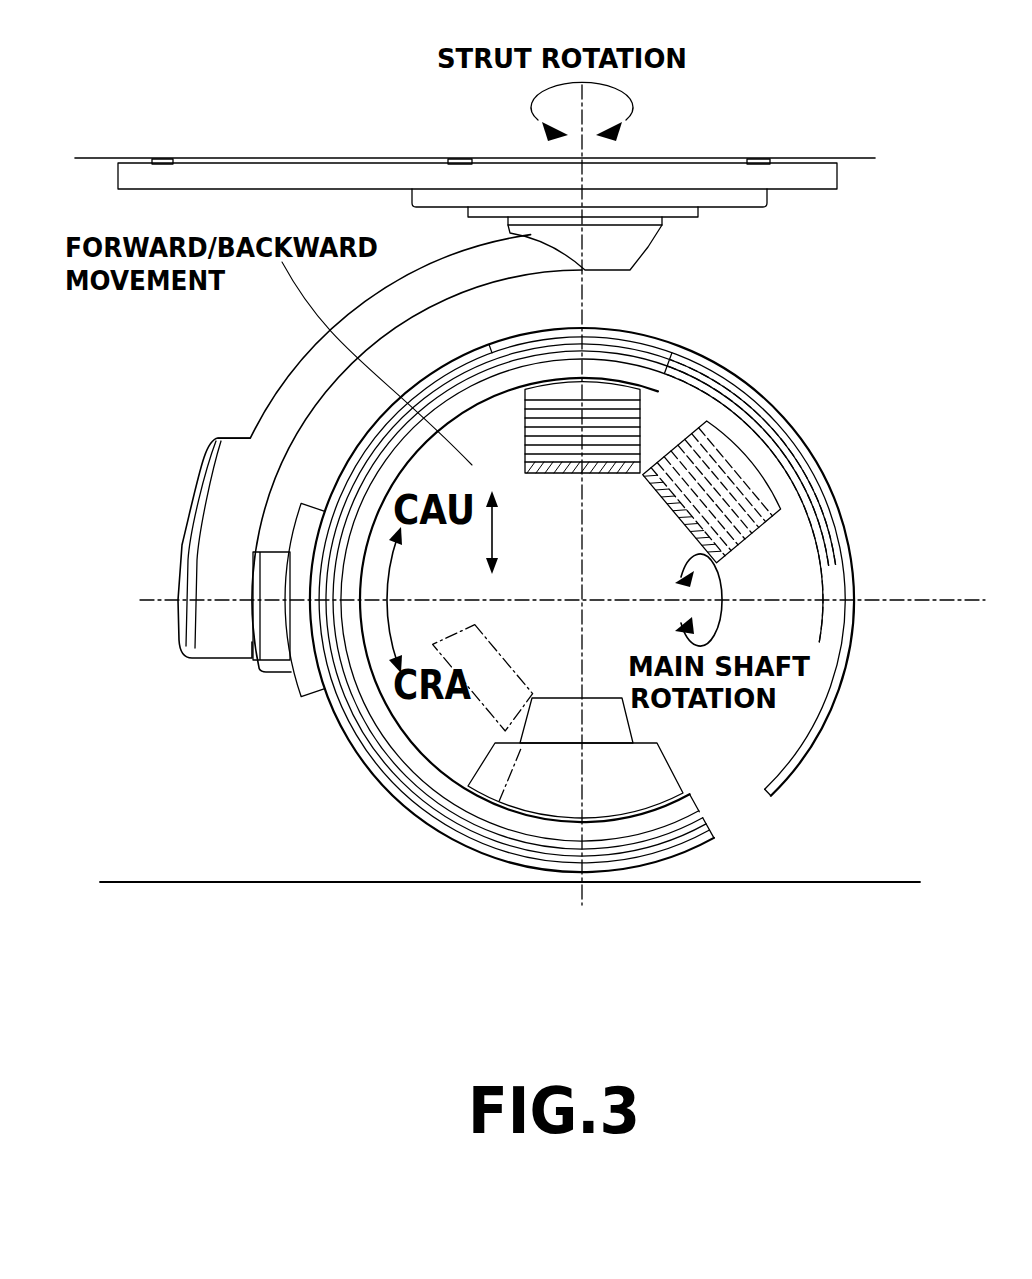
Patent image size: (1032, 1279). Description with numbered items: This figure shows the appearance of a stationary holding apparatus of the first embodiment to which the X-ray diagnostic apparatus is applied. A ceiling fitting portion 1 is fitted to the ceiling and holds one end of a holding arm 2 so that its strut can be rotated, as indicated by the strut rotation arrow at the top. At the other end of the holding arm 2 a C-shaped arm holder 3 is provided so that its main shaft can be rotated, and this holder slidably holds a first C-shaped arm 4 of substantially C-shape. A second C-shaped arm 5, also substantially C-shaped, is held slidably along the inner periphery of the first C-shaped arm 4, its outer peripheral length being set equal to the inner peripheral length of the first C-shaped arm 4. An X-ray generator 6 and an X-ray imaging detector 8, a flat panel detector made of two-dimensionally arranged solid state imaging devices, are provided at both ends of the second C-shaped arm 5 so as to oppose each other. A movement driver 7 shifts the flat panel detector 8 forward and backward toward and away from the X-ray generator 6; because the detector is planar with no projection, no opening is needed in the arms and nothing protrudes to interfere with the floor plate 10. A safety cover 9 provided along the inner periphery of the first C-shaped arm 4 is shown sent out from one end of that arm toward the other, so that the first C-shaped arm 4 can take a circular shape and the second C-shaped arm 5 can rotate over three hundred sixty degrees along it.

The ceiling fitting portion 1 is at (704, 168).
The holding arm 2 is at (288, 402).
The C-shaped arm holder 3 is at (221, 634).
The first C-shaped arm 4 is at (618, 335).
The second C-shaped arm 5 is at (408, 758).
The X-ray generator 6 is at (668, 780).
The movement driver 7 is at (560, 405).
The X-ray imaging detector (flat panel detector) 8 is at (533, 483).
The safety cover 9 is at (851, 567).
The floor plate 10 is at (800, 897).